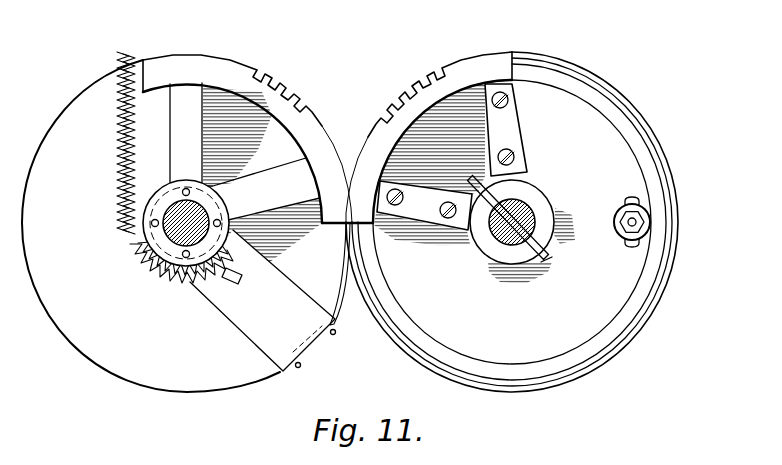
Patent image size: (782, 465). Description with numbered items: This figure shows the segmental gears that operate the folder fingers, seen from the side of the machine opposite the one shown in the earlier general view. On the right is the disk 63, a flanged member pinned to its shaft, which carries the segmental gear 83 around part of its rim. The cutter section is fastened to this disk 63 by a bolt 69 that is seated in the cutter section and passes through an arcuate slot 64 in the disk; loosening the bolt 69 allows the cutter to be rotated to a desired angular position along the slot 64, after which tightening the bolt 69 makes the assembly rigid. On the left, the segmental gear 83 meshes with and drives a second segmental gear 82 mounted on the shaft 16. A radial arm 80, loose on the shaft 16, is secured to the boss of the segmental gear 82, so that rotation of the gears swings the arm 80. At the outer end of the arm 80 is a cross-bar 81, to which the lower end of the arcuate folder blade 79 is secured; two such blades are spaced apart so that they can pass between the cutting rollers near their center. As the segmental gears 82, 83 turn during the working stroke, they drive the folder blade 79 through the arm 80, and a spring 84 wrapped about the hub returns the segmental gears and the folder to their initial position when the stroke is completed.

The shaft 16 is at (205, 200).
The disk 63 is at (538, 202).
The arcuate slot 64 is at (638, 197).
The bolt 69 is at (644, 221).
The folder blade 79 is at (343, 312).
The radial arm 80 is at (292, 276).
The cross-bar 81 is at (284, 378).
The segmental gear 82 is at (315, 134).
The segmental gear 83 is at (451, 77).
The spring 84 is at (147, 261).